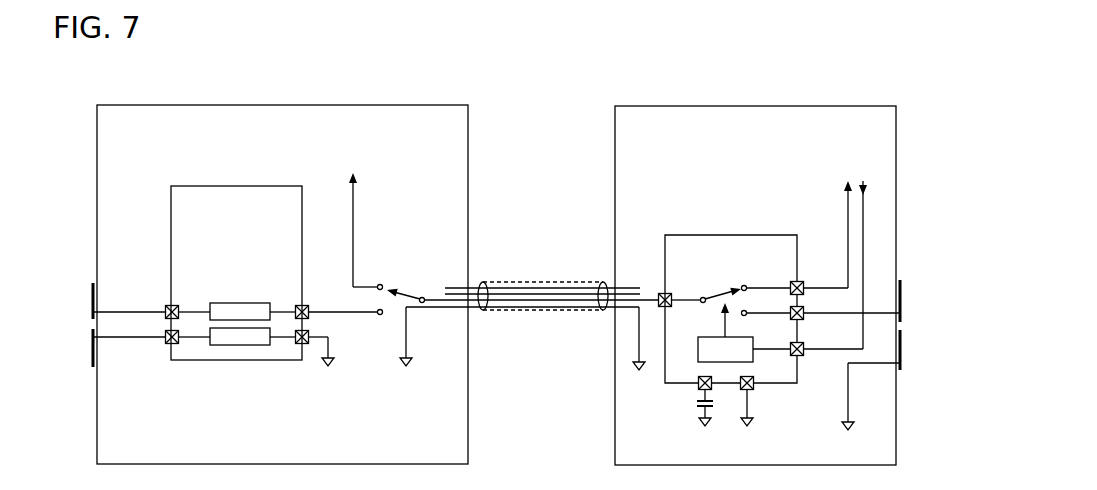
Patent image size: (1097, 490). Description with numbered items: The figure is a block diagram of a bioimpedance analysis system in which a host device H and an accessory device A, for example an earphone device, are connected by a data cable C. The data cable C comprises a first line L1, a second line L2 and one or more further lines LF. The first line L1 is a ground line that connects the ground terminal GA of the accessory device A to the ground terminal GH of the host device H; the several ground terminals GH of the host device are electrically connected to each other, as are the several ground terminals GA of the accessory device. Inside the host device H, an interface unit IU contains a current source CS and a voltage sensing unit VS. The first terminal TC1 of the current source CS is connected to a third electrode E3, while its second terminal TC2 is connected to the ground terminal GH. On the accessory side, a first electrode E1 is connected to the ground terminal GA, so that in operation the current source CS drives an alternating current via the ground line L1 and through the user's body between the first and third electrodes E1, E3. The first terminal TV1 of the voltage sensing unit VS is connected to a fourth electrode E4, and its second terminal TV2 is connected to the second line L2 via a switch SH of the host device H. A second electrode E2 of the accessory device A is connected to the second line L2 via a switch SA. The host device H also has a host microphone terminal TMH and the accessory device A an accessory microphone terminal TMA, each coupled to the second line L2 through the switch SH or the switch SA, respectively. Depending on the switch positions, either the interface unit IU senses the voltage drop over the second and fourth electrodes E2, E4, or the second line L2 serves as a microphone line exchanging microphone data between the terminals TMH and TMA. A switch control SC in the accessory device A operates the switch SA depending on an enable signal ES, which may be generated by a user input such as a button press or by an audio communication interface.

The host device H is at (240, 101).
The accessory device A is at (718, 105).
The interface unit IU is at (236, 273).
The first electrode E1 is at (902, 368).
The second electrode E2 is at (902, 288).
The third electrode E3 is at (92, 350).
The fourth electrode E4 is at (92, 282).
The first terminal of the voltage sensing unit TV1 is at (156, 303).
The second terminal of the voltage sensing unit TV2 is at (339, 305).
The first terminal of the current source TC1 is at (157, 346).
The second terminal of the current source TC2 is at (318, 331).
The voltage sensing unit VS is at (237, 312).
The current source CS is at (237, 337).
The ground terminal of the host device GH is at (377, 347).
The host microphone terminal TMH is at (370, 221).
The switch of the host device SH is at (405, 288).
The further lines LF is at (473, 290).
The first line L1 is at (475, 308).
The second line L2 is at (558, 302).
The data cable C is at (512, 280).
The ground terminal of the accessory device GA is at (741, 379).
The switch of the accessory device SA is at (731, 296).
The switch control SC is at (731, 312).
The accessory microphone terminal TMA is at (826, 228).
The enable signal ES is at (847, 261).